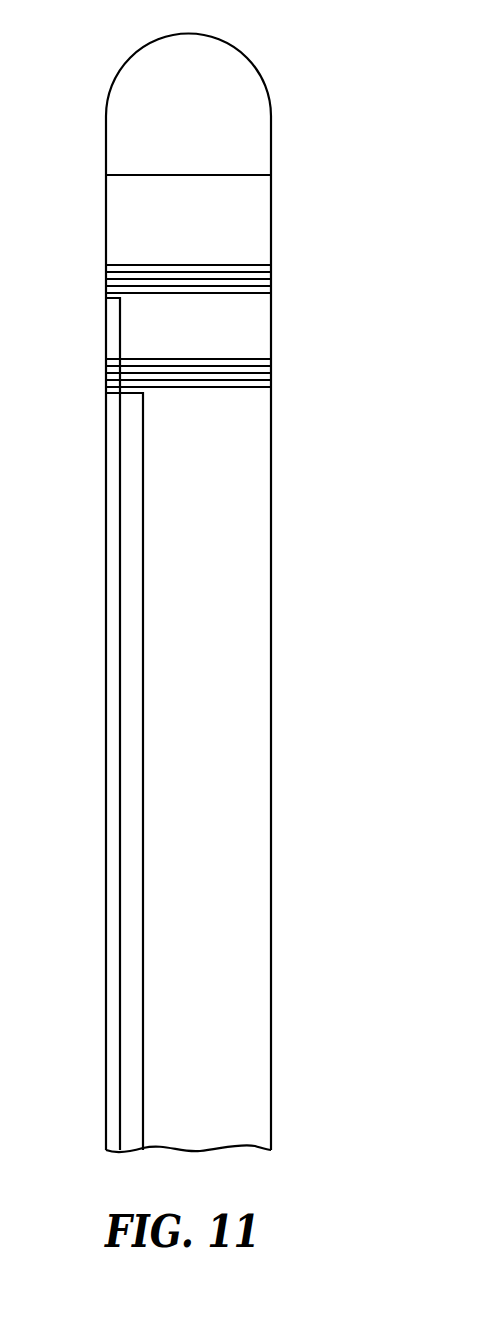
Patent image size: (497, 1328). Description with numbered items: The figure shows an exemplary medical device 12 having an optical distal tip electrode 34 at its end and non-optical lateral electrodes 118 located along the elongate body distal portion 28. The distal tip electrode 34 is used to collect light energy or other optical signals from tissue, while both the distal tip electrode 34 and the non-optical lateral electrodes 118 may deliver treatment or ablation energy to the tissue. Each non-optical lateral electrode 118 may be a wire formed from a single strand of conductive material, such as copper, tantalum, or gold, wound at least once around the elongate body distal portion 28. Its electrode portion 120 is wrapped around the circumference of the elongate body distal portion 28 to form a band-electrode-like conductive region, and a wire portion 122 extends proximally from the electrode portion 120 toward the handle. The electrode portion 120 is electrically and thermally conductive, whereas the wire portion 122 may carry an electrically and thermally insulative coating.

The medical device 12 is at (316, 188).
The elongate body distal portion 28 is at (272, 727).
The optical distal tip electrode 34 is at (142, 45).
The non-optical lateral electrodes 118 is at (300, 270).
The electrode portion 120 is at (148, 264).
The wire portion 122 is at (118, 522).